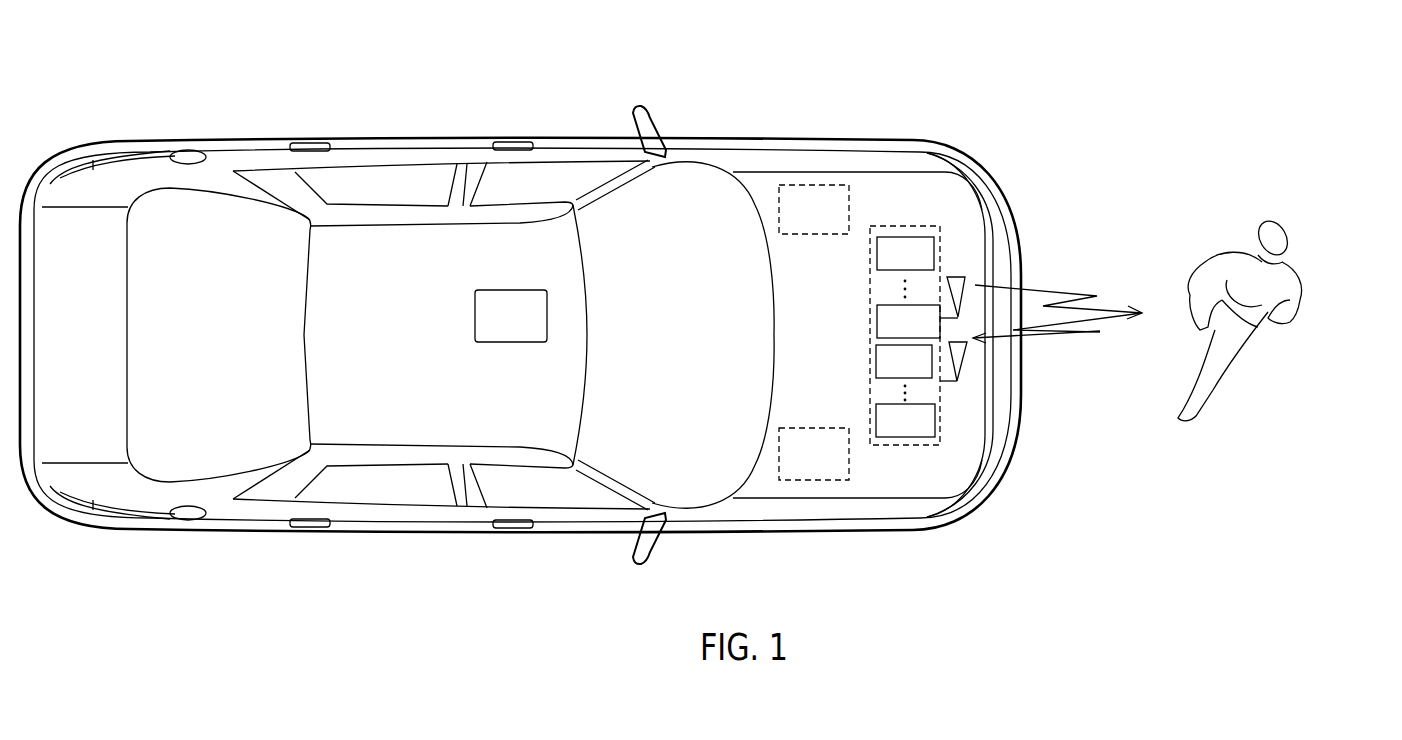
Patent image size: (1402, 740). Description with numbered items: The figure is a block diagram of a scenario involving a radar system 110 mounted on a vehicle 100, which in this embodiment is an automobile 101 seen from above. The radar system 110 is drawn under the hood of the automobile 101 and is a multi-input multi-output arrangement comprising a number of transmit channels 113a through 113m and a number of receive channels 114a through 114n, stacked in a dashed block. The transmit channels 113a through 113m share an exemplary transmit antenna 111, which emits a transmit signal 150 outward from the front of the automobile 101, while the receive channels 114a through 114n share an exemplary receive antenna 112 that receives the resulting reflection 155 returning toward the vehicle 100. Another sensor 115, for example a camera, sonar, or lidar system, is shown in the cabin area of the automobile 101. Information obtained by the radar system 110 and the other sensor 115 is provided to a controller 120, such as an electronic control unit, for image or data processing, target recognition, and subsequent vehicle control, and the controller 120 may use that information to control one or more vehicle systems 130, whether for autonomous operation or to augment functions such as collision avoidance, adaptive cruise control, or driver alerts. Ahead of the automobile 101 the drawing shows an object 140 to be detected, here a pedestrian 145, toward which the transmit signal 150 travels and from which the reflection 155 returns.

The vehicle 100 is at (214, 137).
The automobile 101 is at (520, 335).
The radar system 110 is at (870, 318).
The transmit antenna 111 is at (965, 276).
The receive antenna 112 is at (964, 355).
The transmit channel 113a is at (889, 262).
The transmit channel 113m is at (890, 330).
The receive channel 114a is at (888, 370).
The receive channel 114n is at (889, 429).
The sensor 115 is at (490, 331).
The controller 120 is at (795, 225).
The vehicle system 130 is at (795, 469).
The object 140 is at (1318, 227).
The pedestrian 145 is at (1303, 313).
The transmit signal 150 is at (1035, 288).
The reflection 155 is at (1030, 337).